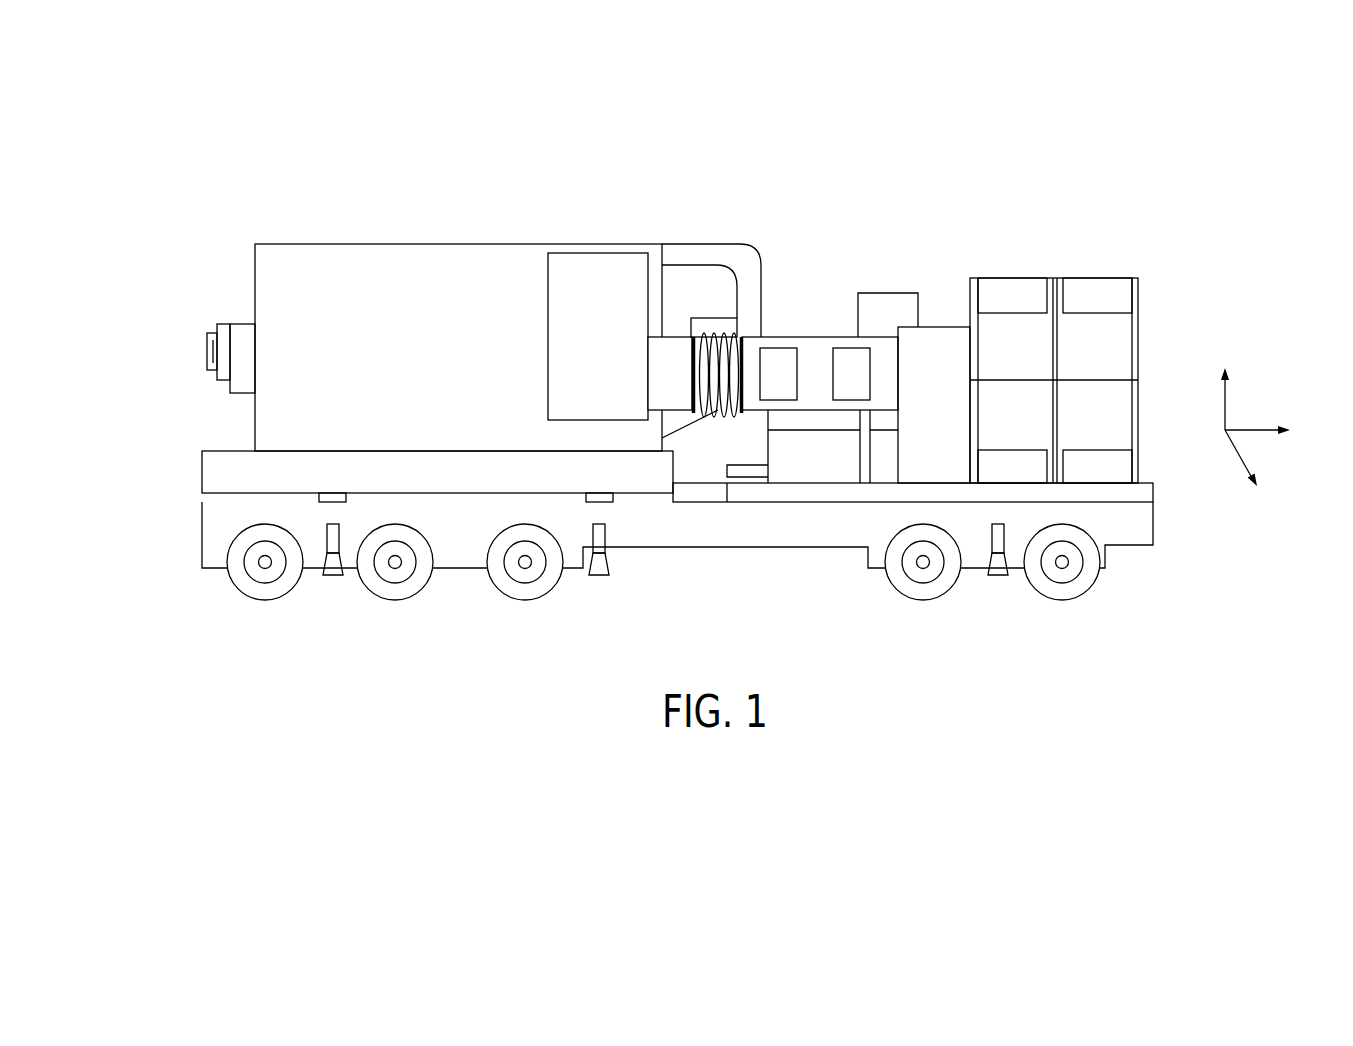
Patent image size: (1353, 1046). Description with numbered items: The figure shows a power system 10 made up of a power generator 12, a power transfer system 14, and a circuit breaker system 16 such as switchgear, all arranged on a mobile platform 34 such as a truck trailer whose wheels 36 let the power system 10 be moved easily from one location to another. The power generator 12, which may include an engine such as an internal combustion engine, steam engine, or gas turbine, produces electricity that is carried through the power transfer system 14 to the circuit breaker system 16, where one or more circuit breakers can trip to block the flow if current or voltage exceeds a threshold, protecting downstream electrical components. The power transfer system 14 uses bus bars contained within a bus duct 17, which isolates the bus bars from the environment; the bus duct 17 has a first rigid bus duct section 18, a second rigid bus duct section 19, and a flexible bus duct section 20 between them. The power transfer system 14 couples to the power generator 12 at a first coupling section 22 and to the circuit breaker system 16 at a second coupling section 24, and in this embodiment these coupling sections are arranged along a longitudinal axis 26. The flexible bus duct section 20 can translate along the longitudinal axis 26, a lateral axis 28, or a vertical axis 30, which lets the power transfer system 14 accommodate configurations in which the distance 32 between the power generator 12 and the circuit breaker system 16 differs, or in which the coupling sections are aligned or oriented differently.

The power system 10 is at (1036, 78).
The power generator 12 is at (457, 244).
The power transfer system 14 is at (889, 143).
The circuit breaker system 16 is at (1057, 278).
The bus duct 17 is at (777, 310).
The first rigid bus duct section 18 is at (673, 336).
The second rigid bus duct section 19 is at (817, 337).
The flexible bus duct section 20 is at (722, 338).
The first coupling section 22 is at (659, 360).
The second coupling section 24 is at (899, 372).
The longitudinal axis 26 is at (1253, 430).
The lateral axis 28 is at (1236, 455).
The vertical axis 30 is at (1223, 405).
The distance 32 is at (898, 318).
The mobile platform 34 is at (194, 530).
The wheels 36 is at (492, 572).